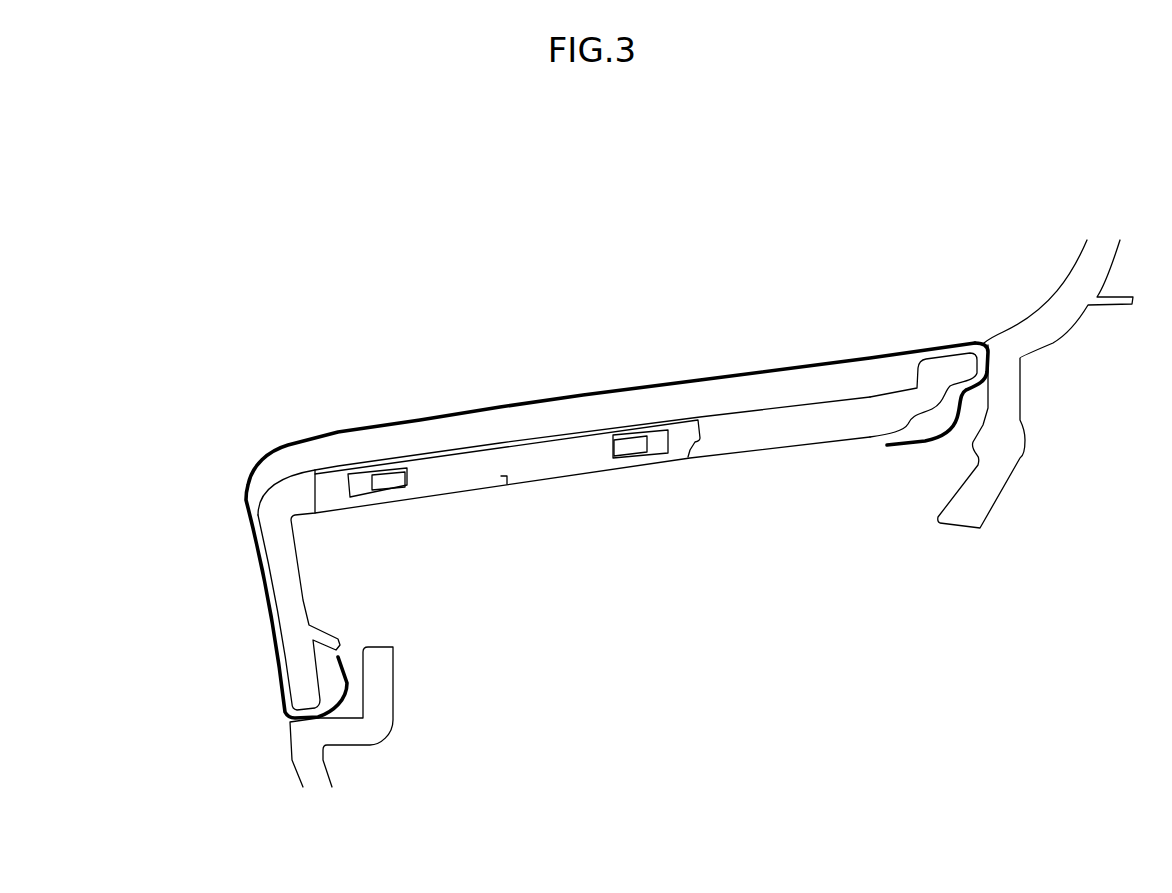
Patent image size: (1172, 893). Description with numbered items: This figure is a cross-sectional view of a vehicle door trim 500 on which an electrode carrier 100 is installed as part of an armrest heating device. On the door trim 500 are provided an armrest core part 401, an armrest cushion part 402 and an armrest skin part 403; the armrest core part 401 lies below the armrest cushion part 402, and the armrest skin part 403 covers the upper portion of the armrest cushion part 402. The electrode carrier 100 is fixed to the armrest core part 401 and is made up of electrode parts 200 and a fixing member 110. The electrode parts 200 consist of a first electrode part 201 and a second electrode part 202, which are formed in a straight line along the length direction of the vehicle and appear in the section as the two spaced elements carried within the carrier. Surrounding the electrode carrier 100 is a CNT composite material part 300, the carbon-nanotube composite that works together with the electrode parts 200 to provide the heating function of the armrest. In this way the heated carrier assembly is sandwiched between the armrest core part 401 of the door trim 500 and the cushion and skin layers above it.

The electrode carrier 100 is at (507, 574).
The fixing member 110 is at (468, 466).
The electrode parts 200 is at (508, 551).
The first electrode part 201 is at (392, 490).
The second electrode part 202 is at (505, 484).
The CNT composite material part 300 is at (593, 428).
The armrest core part 401 is at (773, 430).
The armrest cushion part 402 is at (373, 447).
The armrest skin part 403 is at (788, 368).
The door trim 500 is at (293, 762).